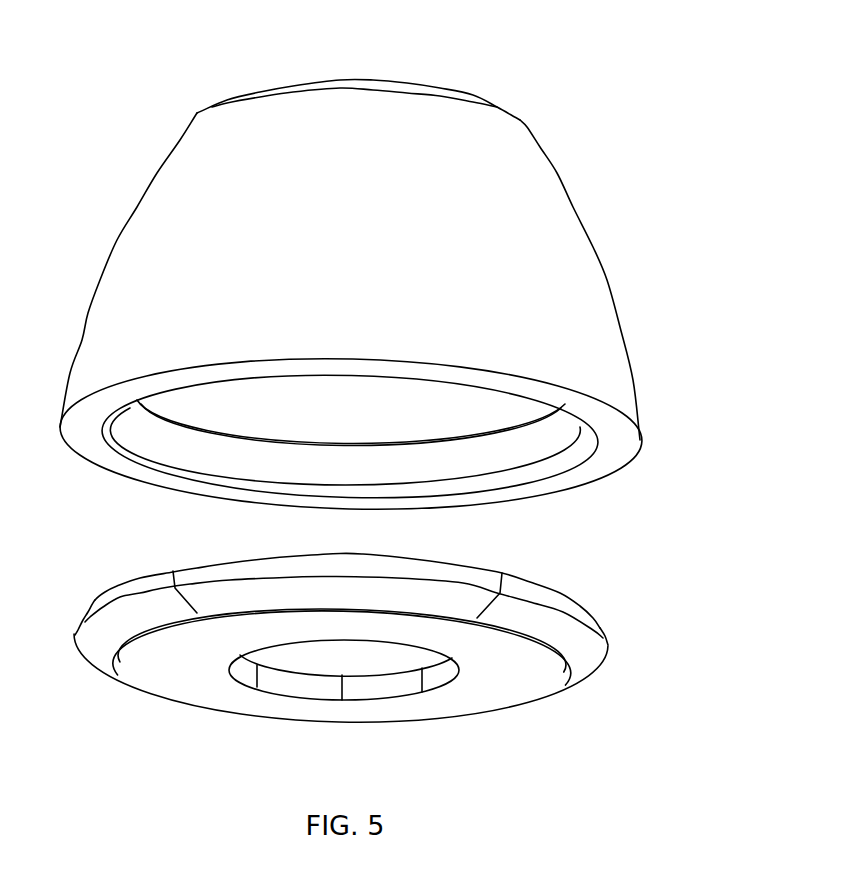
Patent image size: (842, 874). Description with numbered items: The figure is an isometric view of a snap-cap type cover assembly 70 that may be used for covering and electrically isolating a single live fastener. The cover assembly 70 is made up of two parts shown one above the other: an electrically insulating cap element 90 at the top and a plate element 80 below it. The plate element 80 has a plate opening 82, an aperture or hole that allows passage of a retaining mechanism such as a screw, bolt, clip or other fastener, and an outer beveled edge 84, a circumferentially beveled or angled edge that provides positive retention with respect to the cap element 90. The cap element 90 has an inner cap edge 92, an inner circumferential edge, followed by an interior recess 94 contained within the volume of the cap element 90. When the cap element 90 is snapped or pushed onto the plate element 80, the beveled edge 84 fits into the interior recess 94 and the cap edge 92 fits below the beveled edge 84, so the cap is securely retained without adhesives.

The cover assembly 70 is at (470, 52).
The cap element 90 is at (565, 217).
The inner cap edge 92 is at (503, 482).
The interior recess 94 is at (552, 433).
The plate element 80 is at (525, 692).
The plate opening 82 is at (306, 655).
The outer beveled edge 84 is at (138, 577).